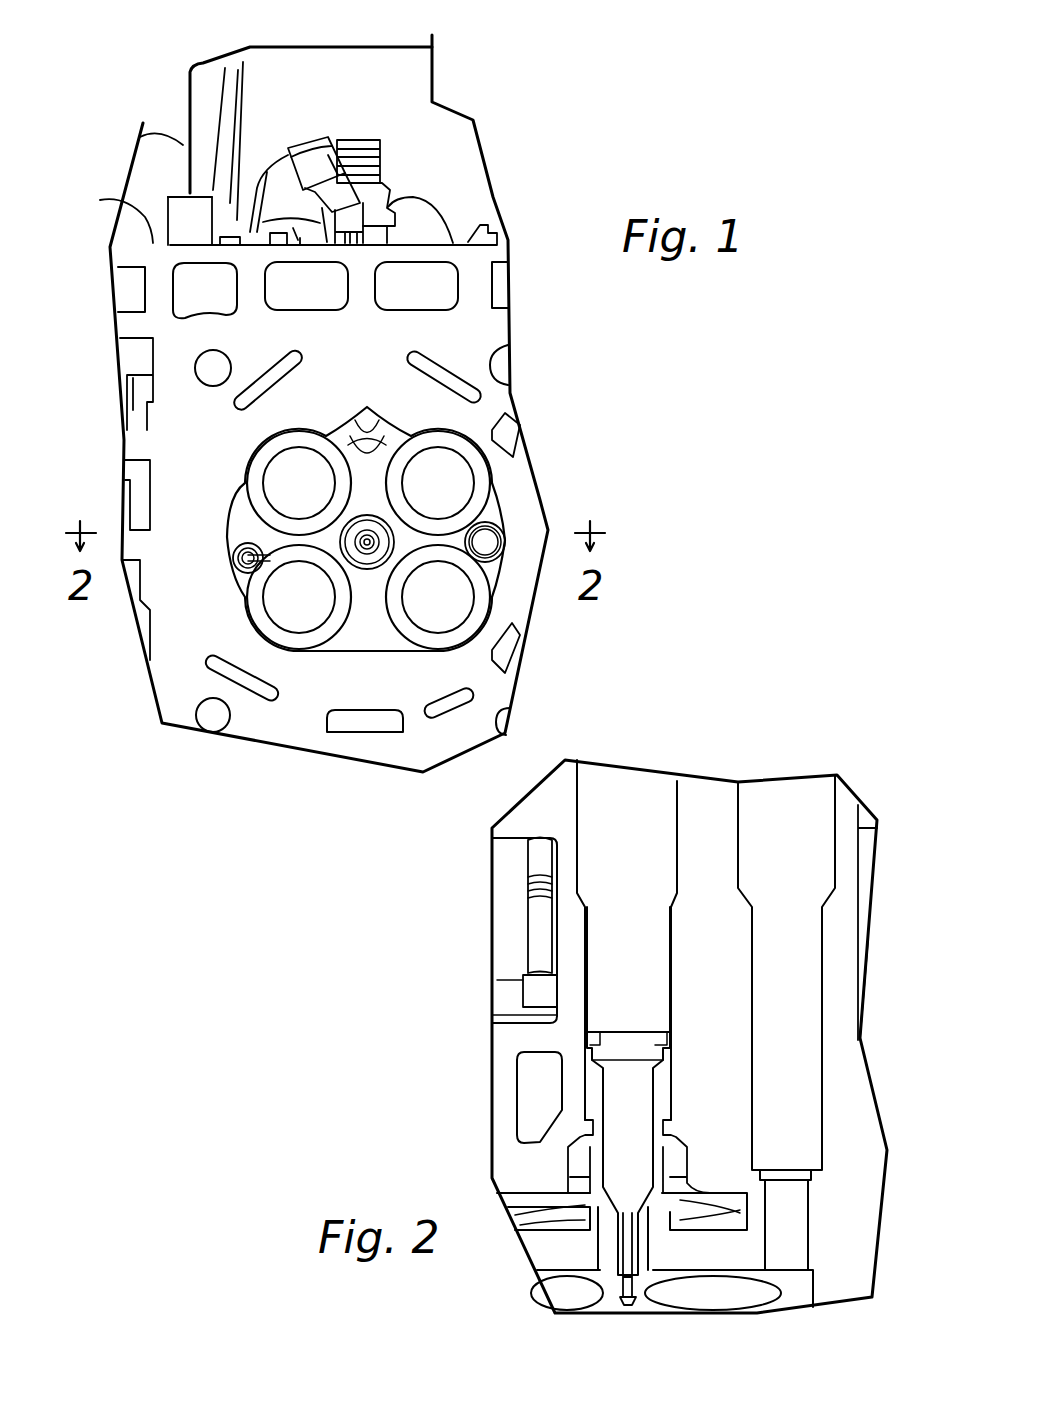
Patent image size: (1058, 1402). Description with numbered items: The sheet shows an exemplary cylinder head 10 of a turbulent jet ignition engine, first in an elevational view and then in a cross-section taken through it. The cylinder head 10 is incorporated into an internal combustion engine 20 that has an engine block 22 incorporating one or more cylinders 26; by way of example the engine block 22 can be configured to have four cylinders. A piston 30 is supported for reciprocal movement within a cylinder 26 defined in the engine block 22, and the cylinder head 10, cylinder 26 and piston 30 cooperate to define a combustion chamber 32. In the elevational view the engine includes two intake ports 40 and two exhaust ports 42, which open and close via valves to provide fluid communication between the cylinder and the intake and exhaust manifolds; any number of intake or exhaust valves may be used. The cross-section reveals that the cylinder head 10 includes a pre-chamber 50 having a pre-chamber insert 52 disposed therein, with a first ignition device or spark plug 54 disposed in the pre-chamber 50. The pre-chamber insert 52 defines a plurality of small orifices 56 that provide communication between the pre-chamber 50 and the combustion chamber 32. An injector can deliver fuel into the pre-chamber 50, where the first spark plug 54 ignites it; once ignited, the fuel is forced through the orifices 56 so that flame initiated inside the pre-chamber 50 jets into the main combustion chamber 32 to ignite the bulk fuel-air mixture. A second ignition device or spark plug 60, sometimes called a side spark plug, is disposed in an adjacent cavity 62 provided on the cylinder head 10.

In FIG. 1, the cylinder head 10 is at (470, 340).
In FIG. 2, the cylinder head 10 is at (705, 793).
In FIG. 1, the internal combustion engine 20 is at (528, 182).
In FIG. 1, the engine block 22 is at (153, 243).
In FIG. 1, the cylinder 26 is at (210, 500).
In FIG. 1, the piston 30 is at (202, 577).
In FIG. 1, the combustion chamber 32 is at (216, 609).
In FIG. 1, the intake ports 40 is at (295, 473).
In FIG. 1, the exhaust ports 42 is at (440, 482).
In FIG. 2, the pre-chamber 50 is at (627, 1143).
In FIG. 2, the pre-chamber insert 52 is at (592, 1080).
In FIG. 2, the first spark plug 54 is at (620, 982).
In FIG. 2, the orifices 56 is at (612, 1297).
In FIG. 2, the second spark plug 60 is at (793, 1012).
In FIG. 2, the cavity 62 is at (793, 812).